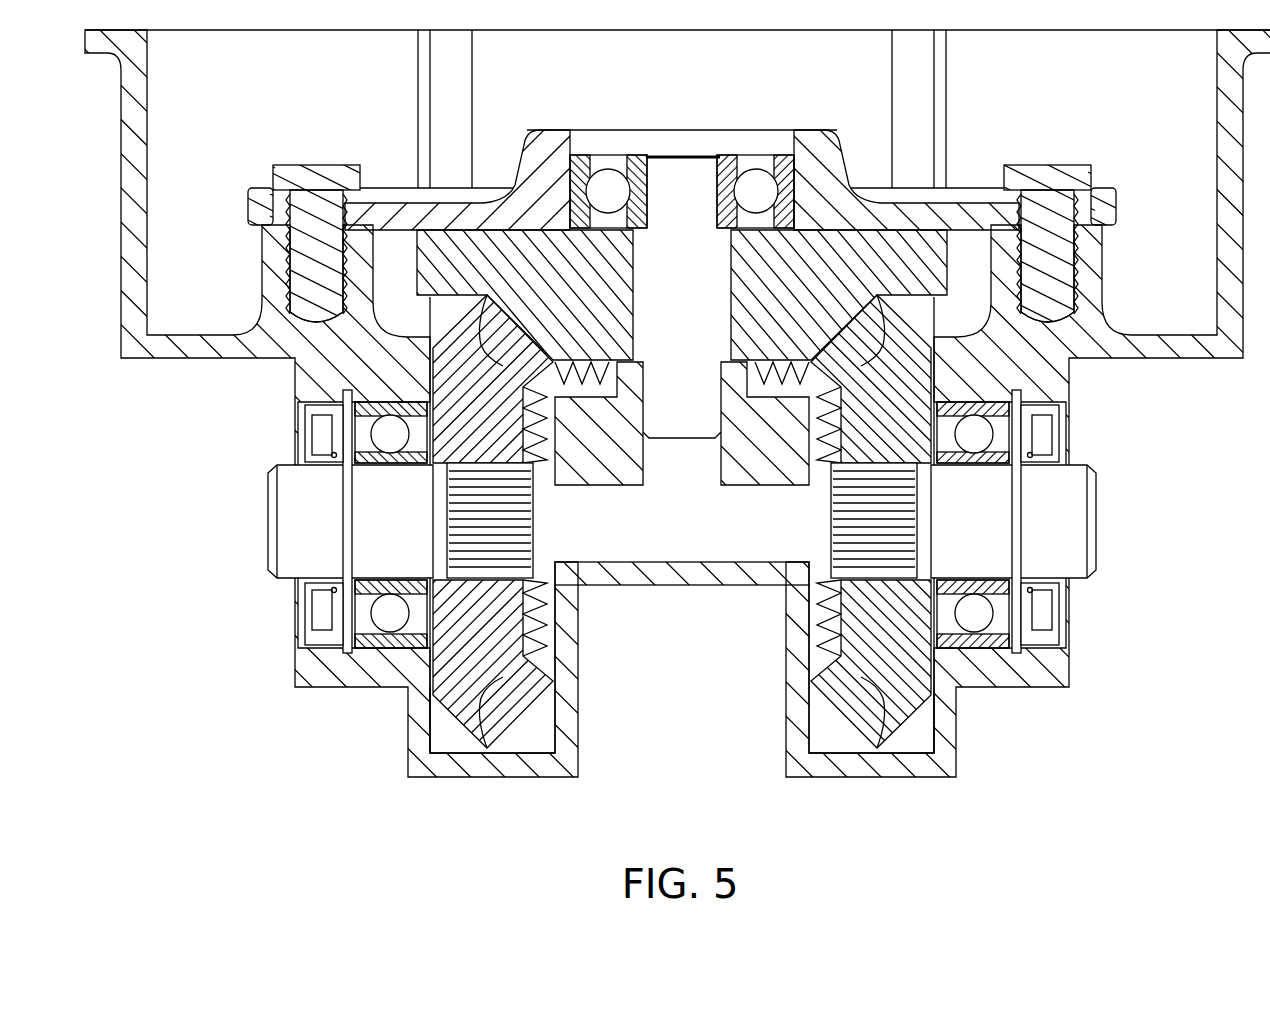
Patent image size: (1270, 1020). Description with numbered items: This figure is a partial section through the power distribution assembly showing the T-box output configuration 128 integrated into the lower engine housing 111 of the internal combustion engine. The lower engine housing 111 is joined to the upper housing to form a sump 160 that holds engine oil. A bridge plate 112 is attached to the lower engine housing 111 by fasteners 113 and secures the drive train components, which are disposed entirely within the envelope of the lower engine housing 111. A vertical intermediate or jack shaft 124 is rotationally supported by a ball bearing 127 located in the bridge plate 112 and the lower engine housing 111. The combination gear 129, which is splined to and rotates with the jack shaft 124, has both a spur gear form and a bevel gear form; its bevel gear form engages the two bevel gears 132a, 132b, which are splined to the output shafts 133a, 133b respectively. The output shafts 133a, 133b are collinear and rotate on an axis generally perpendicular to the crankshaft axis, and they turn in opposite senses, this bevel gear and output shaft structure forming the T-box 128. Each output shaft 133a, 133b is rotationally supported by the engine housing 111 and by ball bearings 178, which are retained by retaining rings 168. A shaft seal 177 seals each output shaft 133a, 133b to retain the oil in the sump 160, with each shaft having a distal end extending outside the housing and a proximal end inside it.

The lower engine housing 111 is at (120, 138).
The bridge plate 112 is at (564, 130).
The fasteners 113 is at (316, 163).
The jack shaft 124 is at (662, 311).
The ball bearing 127 is at (758, 192).
The T-box output configuration 128 is at (685, 603).
The combination gear 129 is at (753, 322).
The bevel gear 132a is at (890, 403).
The bevel gear 132b is at (473, 403).
The output shaft 133a is at (985, 534).
The output shaft 133b is at (320, 534).
The sump 160 is at (533, 725).
The retaining rings 168 is at (348, 435).
The shaft seal 177 is at (317, 635).
The ball bearings 178 is at (390, 612).